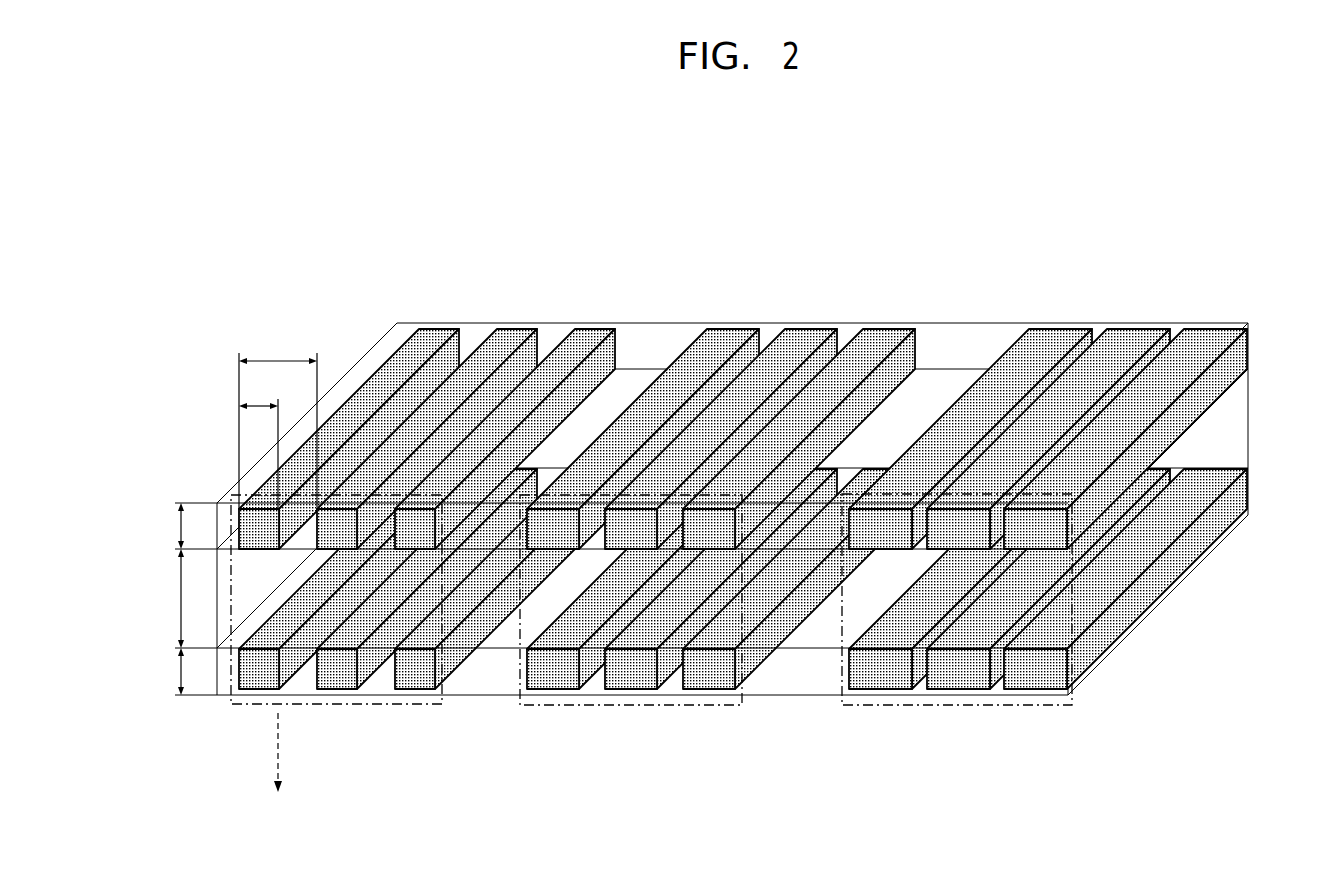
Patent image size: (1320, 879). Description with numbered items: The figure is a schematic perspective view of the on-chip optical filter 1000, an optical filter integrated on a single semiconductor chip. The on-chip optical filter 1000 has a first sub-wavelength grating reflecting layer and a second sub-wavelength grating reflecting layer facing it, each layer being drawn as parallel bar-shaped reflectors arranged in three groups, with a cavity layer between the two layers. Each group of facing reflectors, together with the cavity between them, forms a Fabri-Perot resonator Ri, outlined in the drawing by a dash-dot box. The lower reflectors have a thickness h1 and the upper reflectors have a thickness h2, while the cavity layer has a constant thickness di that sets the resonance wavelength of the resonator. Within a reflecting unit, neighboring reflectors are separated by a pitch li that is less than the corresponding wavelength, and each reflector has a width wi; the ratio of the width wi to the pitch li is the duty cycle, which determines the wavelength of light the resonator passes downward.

The on-chip optical filter 1000 is at (1144, 287).
The Fabri-Perot resonator Ri is at (415, 706).
The thickness of the first reflectors h1 is at (167, 671).
The thickness of the second reflectors h2 is at (167, 526).
The thickness of the cavity layer di is at (167, 598).
The distance between neighboring reflectors li is at (278, 421).
The width of a reflector wi is at (258, 444).